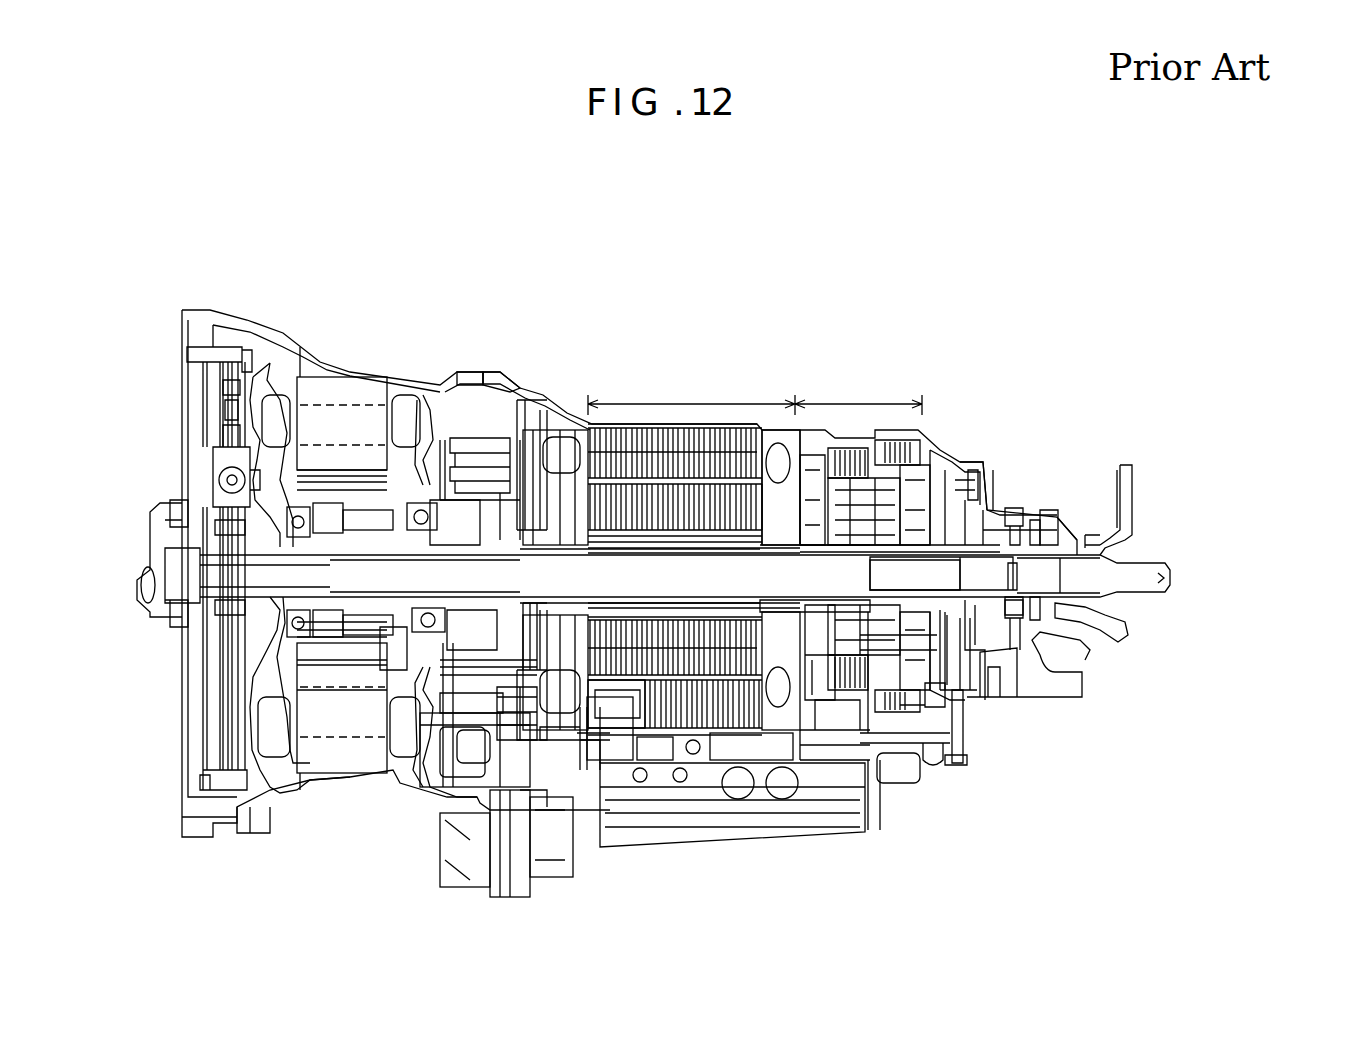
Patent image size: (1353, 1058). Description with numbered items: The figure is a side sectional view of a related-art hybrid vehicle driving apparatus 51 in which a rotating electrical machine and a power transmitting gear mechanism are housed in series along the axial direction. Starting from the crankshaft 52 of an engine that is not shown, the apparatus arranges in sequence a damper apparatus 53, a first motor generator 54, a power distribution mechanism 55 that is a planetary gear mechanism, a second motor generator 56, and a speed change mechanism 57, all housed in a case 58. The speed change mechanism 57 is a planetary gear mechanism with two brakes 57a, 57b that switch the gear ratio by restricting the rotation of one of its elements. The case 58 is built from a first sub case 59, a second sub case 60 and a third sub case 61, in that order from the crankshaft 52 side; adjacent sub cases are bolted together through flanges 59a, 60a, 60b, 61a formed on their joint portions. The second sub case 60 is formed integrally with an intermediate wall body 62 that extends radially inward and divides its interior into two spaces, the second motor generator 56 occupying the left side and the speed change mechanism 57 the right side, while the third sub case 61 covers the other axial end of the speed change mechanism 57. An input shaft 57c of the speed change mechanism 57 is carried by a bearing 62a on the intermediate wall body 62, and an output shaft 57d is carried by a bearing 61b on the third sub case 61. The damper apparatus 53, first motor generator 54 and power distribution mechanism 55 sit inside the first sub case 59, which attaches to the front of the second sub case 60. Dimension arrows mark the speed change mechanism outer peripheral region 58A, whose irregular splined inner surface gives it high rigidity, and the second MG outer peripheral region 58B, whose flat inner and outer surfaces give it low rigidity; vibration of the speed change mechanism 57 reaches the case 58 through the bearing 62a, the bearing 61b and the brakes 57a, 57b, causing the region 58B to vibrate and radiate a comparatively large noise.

The hybrid vehicle driving apparatus 51 is at (759, 284).
The crankshaft 52 is at (148, 520).
The damper apparatus 53 is at (224, 343).
The first motor generator 54 is at (345, 392).
The power distribution mechanism 55 is at (468, 470).
The second motor generator 56 is at (725, 418).
The speed change mechanism 57 is at (930, 447).
The brake 57a is at (835, 440).
The brake 57b is at (870, 450).
The input shaft 57c is at (782, 605).
The output shaft 57d is at (1037, 522).
The case 58 is at (545, 390).
The speed change mechanism outer peripheral region 58A is at (858, 396).
The second MG outer peripheral region 58B is at (691, 396).
The first sub case 59 is at (380, 372).
The flange 59a is at (468, 388).
The second sub case 60 is at (625, 420).
The flange 60a is at (500, 372).
The flange 60b is at (893, 440).
The third sub case 61 is at (965, 455).
The flange 61a is at (905, 440).
The bearing 61b is at (1057, 518).
The intermediate wall body 62 is at (768, 440).
The bearing 62a is at (800, 550).